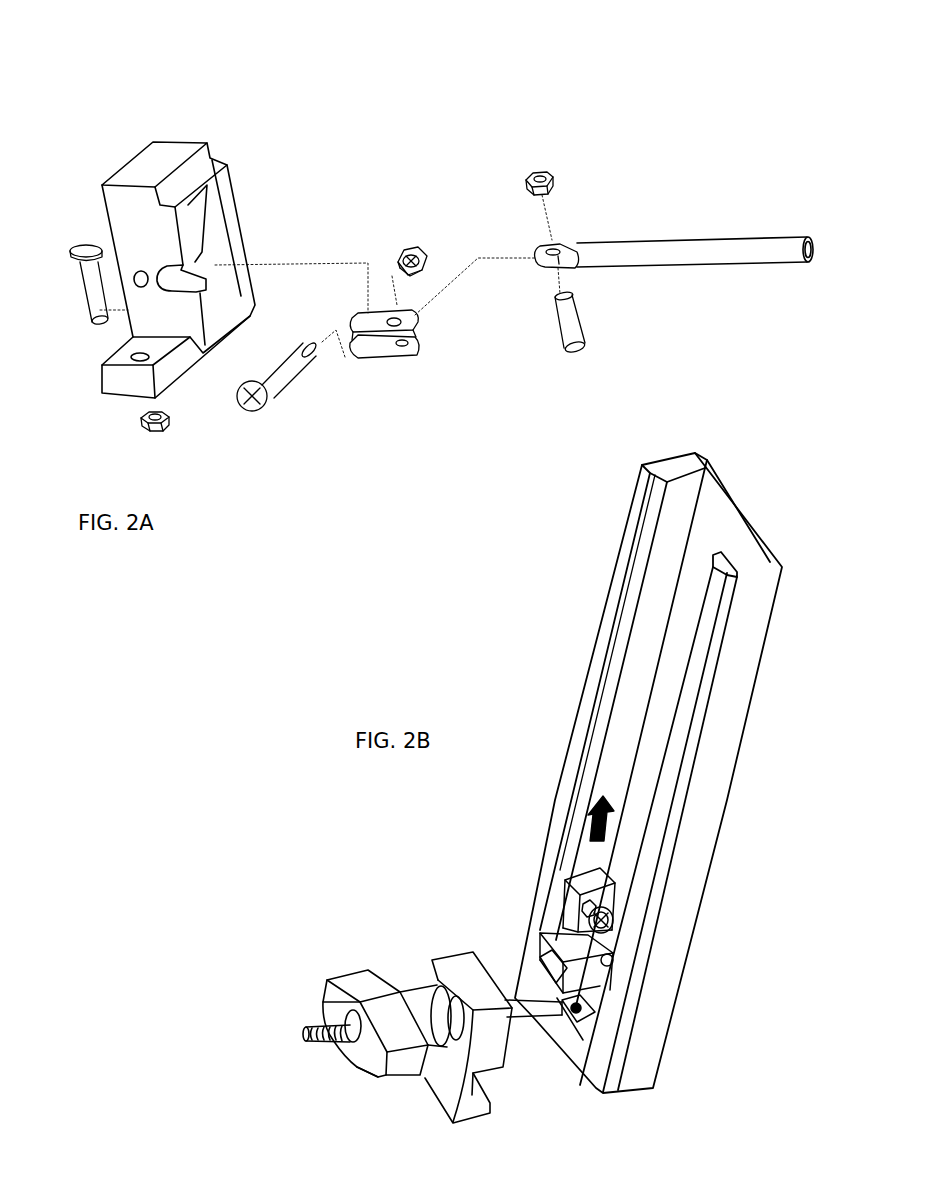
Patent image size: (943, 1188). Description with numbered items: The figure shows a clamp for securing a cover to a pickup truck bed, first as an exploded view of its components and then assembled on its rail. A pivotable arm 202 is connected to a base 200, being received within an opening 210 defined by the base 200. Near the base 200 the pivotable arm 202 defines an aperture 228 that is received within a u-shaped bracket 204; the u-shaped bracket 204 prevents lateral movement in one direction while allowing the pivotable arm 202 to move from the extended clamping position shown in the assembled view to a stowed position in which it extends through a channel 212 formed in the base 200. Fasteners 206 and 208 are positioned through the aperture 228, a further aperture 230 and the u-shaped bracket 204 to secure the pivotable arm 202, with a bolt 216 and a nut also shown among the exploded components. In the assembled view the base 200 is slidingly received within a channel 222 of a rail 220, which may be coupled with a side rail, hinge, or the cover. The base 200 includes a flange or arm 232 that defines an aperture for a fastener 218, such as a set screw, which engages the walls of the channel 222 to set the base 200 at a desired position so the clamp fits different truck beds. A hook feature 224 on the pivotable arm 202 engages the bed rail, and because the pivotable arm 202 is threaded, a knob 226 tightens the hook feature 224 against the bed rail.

In FIG. 2A, the base 200 is at (137, 205).
In FIG. 2A, the pivotable arm 202 is at (697, 252).
In FIG. 2B, the pivotable arm 202 is at (540, 1023).
In FIG. 2A, the u-shaped bracket 204 is at (385, 350).
In FIG. 2A, the fastener 206 is at (568, 327).
In FIG. 2A, the fastener 208 is at (293, 382).
In FIG. 2A, the opening 210 is at (205, 215).
In FIG. 2A, the channel 212 is at (177, 277).
In FIG. 2A, the bolt 216 is at (87, 298).
In FIG. 2A, the fastener 218 is at (138, 357).
In FIG. 2B, the rail 220 is at (672, 930).
In FIG. 2B, the channel 222 is at (708, 522).
In FIG. 2B, the hook feature 224 is at (483, 948).
In FIG. 2B, the knob 226 is at (370, 970).
In FIG. 2A, the aperture 228 is at (555, 245).
In FIG. 2A, the aperture 230 is at (133, 273).
In FIG. 2A, the flange or arm 232 is at (178, 370).